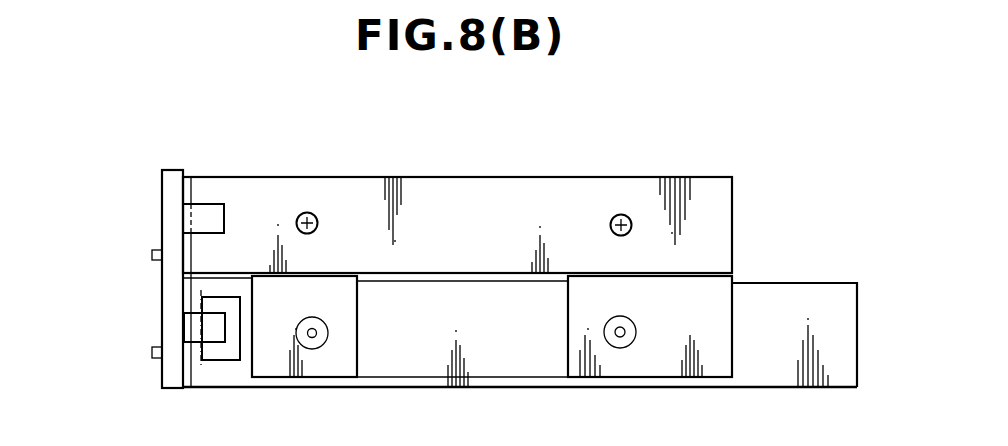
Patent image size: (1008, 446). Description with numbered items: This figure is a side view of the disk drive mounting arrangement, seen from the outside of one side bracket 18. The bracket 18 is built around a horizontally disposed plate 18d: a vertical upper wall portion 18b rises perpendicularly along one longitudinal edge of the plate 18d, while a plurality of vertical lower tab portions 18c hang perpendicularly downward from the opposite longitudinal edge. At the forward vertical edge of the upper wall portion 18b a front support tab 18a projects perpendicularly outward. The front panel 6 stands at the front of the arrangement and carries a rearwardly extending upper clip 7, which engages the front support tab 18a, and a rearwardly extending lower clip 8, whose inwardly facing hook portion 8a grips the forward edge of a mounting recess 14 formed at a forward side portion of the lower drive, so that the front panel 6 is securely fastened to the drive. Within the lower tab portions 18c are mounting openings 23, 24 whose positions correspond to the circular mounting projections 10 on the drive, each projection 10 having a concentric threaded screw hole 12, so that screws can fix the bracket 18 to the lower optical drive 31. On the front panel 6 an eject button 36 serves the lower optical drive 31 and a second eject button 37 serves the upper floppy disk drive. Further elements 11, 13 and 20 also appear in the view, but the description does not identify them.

The front panel 6 is at (158, 210).
The upper clip 7 is at (213, 213).
The lower clip 8 is at (192, 330).
The hook portion 8a is at (200, 303).
The circular mounting projection 10 is at (322, 340).
The second support block 11 is at (628, 343).
The threaded screw hole 12 is at (322, 325).
The second shaft 13 is at (630, 322).
The mounting recess 14 is at (237, 342).
The side bracket 18 is at (740, 223).
The front support tab 18a is at (190, 175).
The upper wall portion 18b is at (554, 195).
The lower tab portion 18c is at (345, 345).
The plate 18d is at (488, 272).
The screw 20 is at (317, 217).
The mounting opening 23 is at (305, 345).
The mounting opening 24 is at (615, 340).
The lower optical drive 31 is at (800, 282).
The eject button 36 is at (152, 358).
The second eject button 37 is at (152, 255).